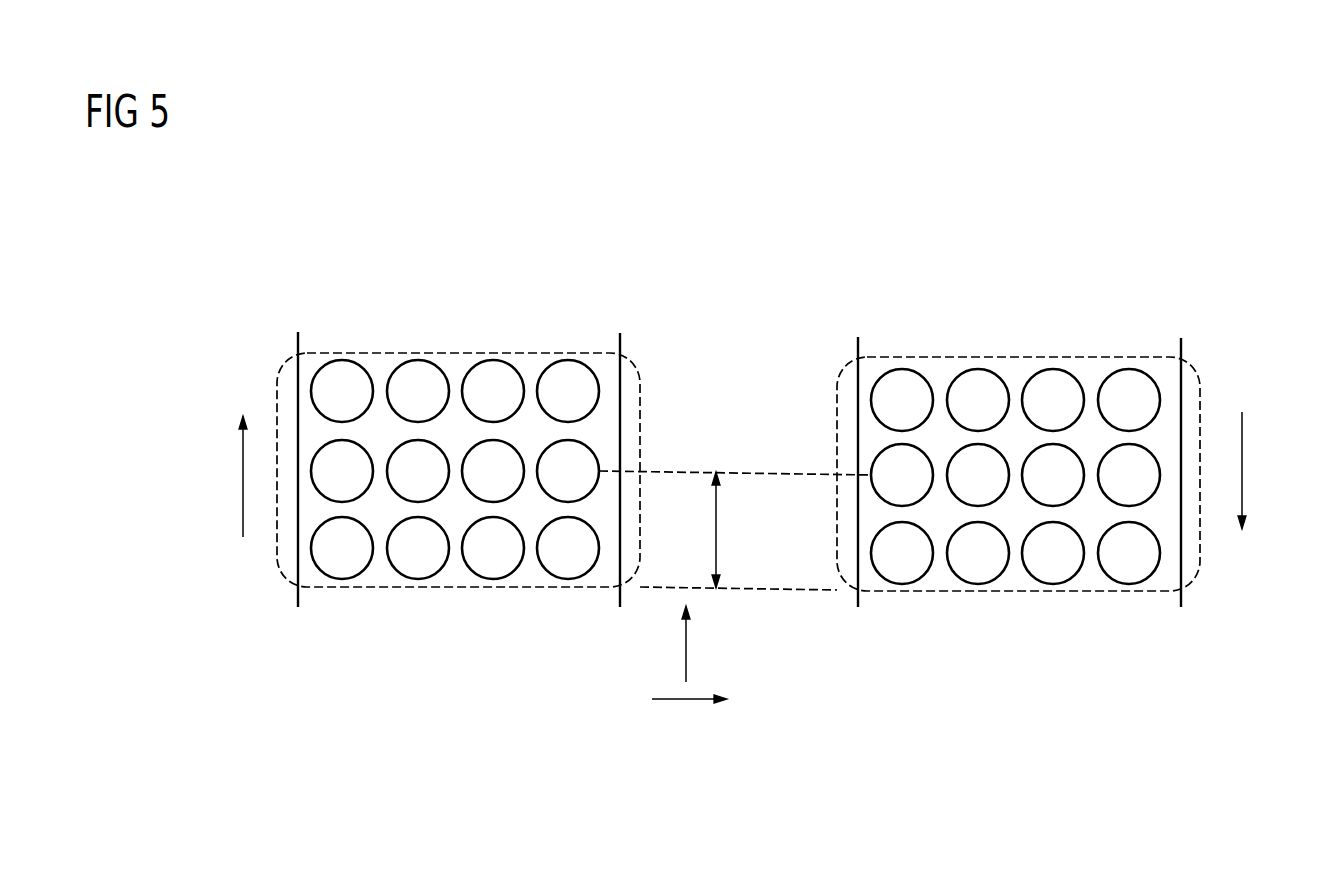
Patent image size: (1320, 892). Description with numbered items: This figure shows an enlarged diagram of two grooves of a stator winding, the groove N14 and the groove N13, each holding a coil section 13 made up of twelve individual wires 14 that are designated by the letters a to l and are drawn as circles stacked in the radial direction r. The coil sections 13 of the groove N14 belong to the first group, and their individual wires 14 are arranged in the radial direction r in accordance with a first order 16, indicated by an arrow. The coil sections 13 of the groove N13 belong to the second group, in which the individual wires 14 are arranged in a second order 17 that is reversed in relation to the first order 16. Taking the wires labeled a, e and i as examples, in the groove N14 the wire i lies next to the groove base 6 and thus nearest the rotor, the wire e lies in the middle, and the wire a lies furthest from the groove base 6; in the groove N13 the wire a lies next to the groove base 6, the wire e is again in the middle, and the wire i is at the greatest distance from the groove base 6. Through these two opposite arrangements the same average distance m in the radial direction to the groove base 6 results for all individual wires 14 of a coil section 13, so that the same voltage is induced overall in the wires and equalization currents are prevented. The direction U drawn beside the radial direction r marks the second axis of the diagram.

The groove N13 is at (443, 288).
The groove N14 is at (1010, 296).
The individual wire 14 is at (345, 357).
The coil section 13 is at (530, 353).
The groove base 6 is at (292, 581).
The second order 17 is at (243, 481).
The first order 16 is at (1243, 460).
The average distance m is at (716, 531).
The radial direction r is at (688, 652).
The circumferential direction U is at (678, 700).